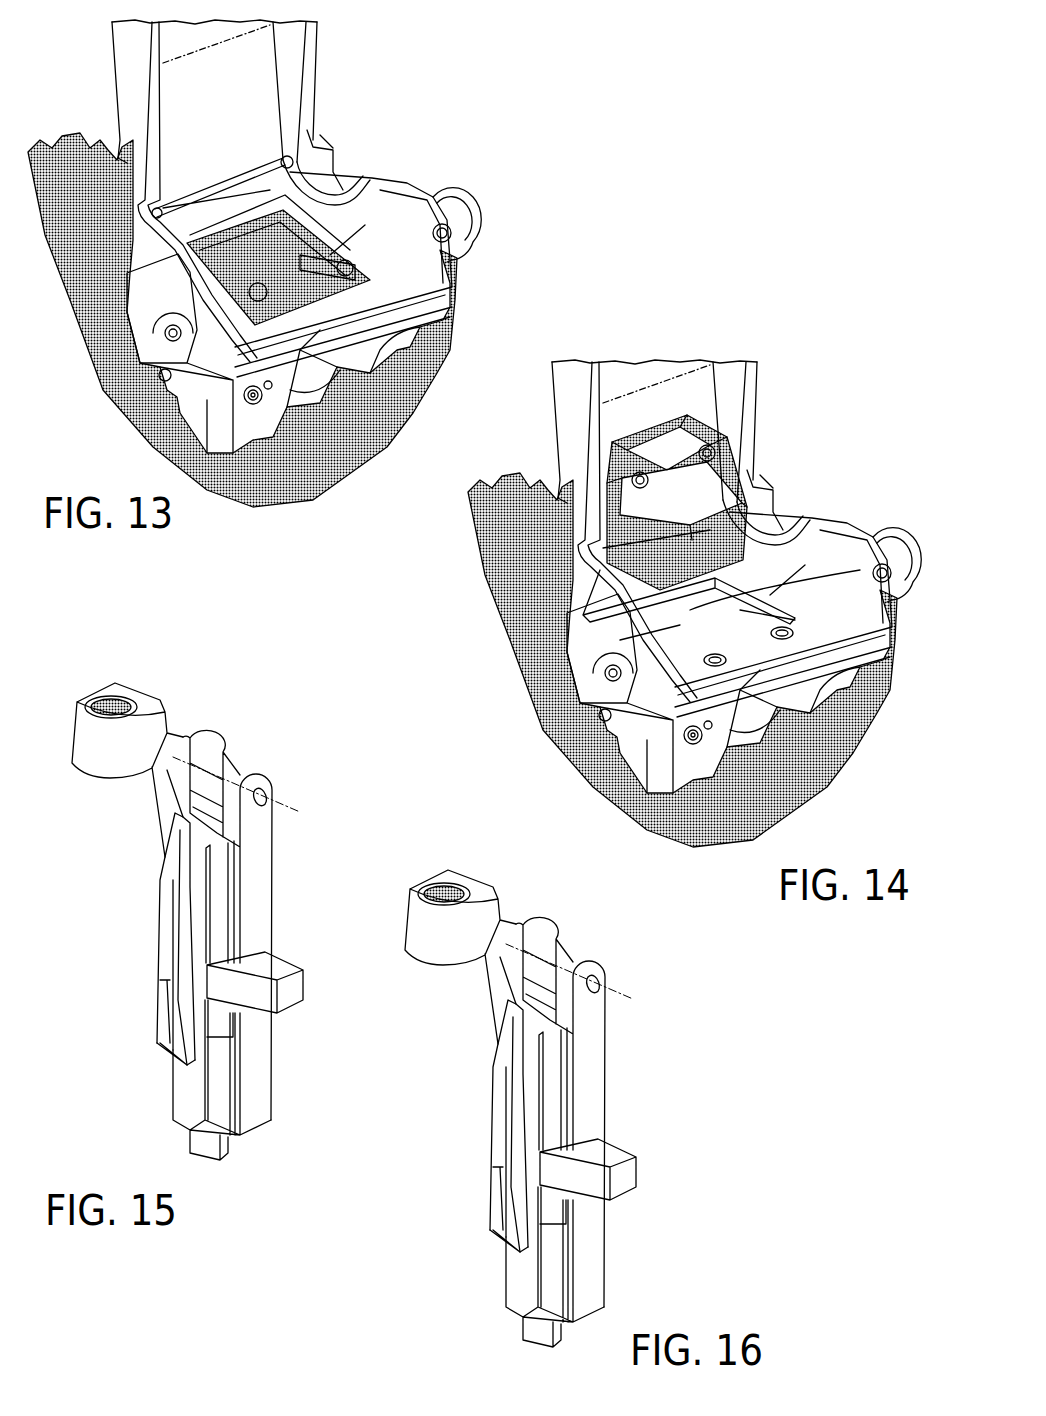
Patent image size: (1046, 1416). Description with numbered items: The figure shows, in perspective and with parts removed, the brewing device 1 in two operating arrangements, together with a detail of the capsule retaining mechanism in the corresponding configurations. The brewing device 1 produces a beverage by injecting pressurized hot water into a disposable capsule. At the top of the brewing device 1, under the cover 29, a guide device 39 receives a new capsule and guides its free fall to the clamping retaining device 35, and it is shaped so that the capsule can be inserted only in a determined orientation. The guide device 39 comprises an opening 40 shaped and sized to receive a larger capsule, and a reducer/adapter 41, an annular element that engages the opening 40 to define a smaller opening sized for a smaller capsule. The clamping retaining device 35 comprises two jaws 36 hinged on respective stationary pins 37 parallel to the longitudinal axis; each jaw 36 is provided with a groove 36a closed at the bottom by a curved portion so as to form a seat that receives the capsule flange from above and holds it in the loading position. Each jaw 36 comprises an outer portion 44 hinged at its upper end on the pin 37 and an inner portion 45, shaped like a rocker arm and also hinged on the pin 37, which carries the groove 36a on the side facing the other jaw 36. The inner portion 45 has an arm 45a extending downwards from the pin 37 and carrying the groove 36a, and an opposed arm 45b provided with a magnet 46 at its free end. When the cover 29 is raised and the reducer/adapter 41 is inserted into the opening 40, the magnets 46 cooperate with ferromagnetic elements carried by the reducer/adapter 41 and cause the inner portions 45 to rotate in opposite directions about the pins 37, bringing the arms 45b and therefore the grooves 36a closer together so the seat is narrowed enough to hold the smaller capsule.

In FIG. 13, the brewing device 1 is at (445, 72).
In FIG. 14, the brewing device 1 is at (687, 583).
In FIG. 13, the cover 29 is at (125, 50).
In FIG. 14, the cover 29 is at (651, 531).
In FIG. 15, the clamping retaining device 35 is at (182, 899).
In FIG. 16, the clamping retaining device 35 is at (515, 1089).
In FIG. 15, the jaw 36 is at (214, 986).
In FIG. 16, the jaw 36 is at (559, 1173).
In FIG. 15, the groove 36a is at (180, 903).
In FIG. 16, the groove 36a is at (477, 1126).
In FIG. 15, the stationary pin 37 is at (267, 795).
In FIG. 16, the stationary pin 37 is at (590, 1112).
In FIG. 13, the guide device 39 is at (302, 214).
In FIG. 14, the guide device 39 is at (762, 579).
In FIG. 14, the opening 40 is at (747, 572).
In FIG. 13, the reducer/adapter 41 is at (240, 226).
In FIG. 14, the reducer/adapter 41 is at (708, 495).
In FIG. 15, the outer portion 44 is at (258, 1057).
In FIG. 16, the outer portion 44 is at (585, 1187).
In FIG. 15, the inner portion 45 is at (136, 964).
In FIG. 16, the inner portion 45 is at (476, 1130).
In FIG. 15, the arm 45a is at (163, 1057).
In FIG. 16, the arm 45a is at (476, 1213).
In FIG. 15, the arm 45b is at (97, 760).
In FIG. 16, the arm 45b is at (426, 957).
In FIG. 15, the magnet 46 is at (100, 702).
In FIG. 16, the magnet 46 is at (429, 868).